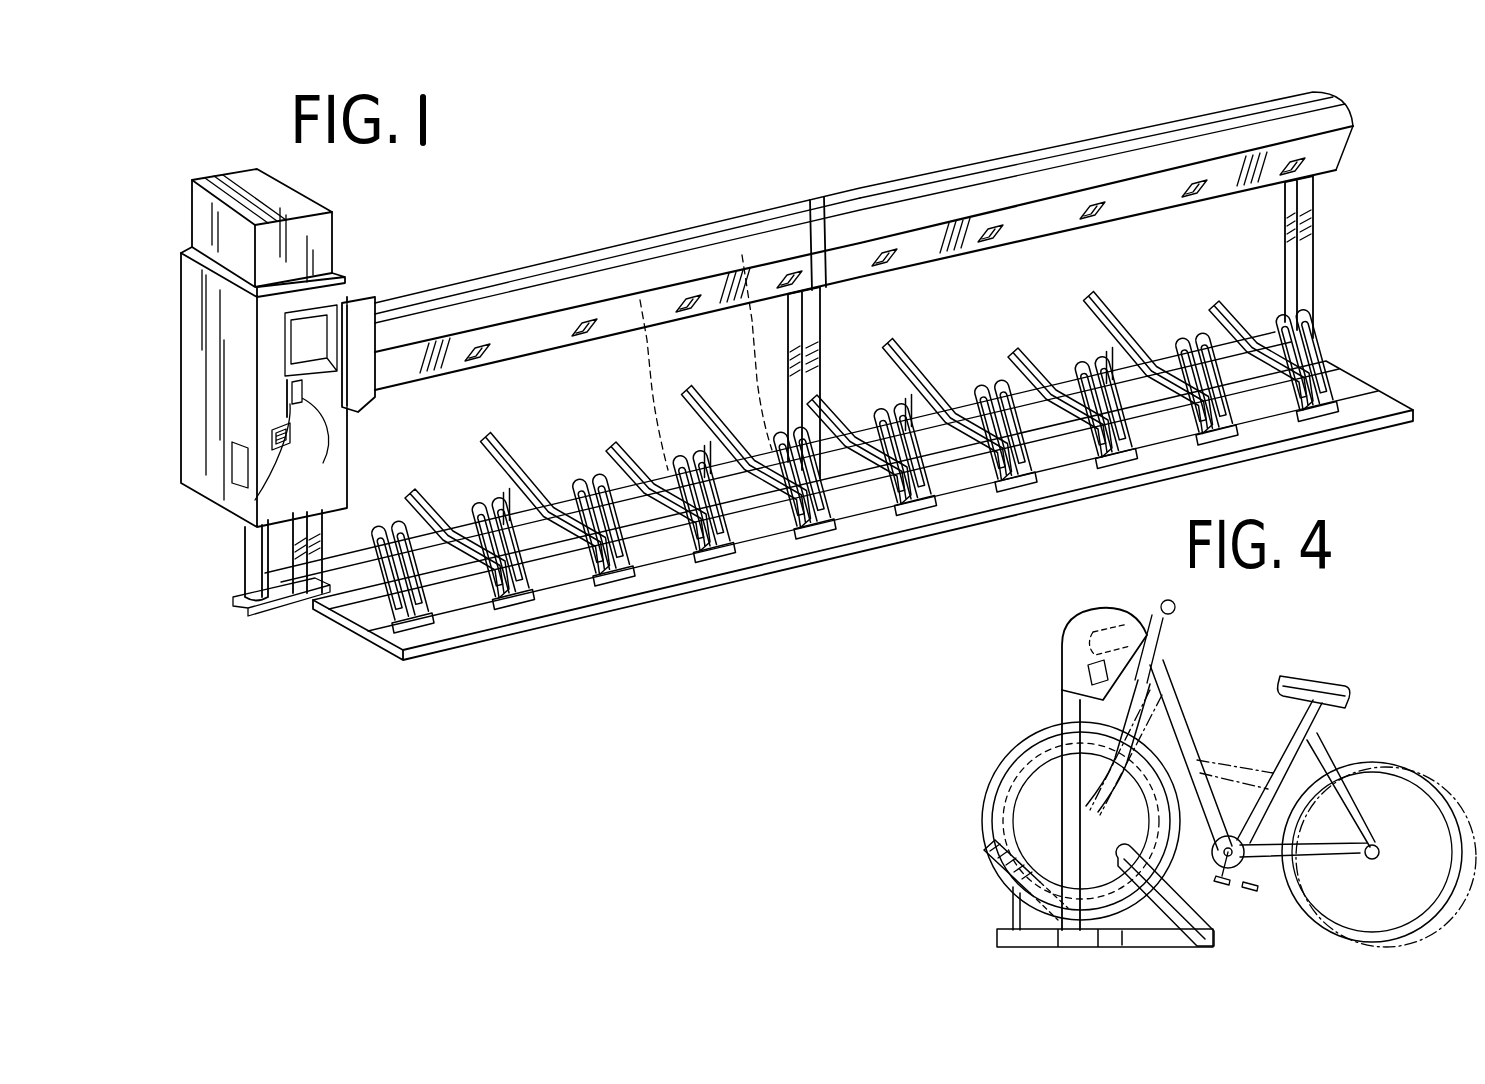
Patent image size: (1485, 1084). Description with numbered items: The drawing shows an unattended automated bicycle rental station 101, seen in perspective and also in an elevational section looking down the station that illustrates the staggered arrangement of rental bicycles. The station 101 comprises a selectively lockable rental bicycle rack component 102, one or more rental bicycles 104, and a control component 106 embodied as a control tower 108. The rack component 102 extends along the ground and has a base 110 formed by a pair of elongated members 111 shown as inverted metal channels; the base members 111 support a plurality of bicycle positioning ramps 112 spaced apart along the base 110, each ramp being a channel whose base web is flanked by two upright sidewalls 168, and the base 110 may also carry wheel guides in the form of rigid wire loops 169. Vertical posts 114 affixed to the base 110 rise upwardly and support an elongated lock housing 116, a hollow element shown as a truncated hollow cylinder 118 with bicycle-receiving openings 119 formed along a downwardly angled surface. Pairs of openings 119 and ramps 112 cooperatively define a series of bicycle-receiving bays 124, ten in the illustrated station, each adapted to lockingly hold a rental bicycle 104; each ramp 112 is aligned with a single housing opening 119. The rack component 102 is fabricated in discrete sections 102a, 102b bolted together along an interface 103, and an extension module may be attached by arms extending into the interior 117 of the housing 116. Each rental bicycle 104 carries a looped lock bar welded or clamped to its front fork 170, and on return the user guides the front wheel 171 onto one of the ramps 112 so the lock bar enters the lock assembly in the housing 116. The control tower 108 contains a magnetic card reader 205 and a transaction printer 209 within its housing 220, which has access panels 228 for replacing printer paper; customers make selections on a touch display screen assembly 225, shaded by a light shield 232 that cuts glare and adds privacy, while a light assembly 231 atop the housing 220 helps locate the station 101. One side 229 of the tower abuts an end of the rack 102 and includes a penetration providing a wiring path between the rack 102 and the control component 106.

In FIG. 1, the bicycle rental station 101 is at (237, 158).
In FIG. 1, the rental bicycle rack component 102 is at (1187, 124).
In FIG. 1, the rental rack section 102a is at (530, 284).
In FIG. 1, the rental rack section 102b is at (1007, 170).
In FIG. 1, the interface 103 is at (818, 236).
In FIG. 4, the rental bicycle 104 is at (1342, 684).
In FIG. 1, the control component 106 is at (345, 229).
In FIG. 1, the control tower 108 is at (194, 366).
In FIG. 1, the base 110 is at (1345, 327).
In FIG. 1, the elongated members 111 is at (326, 599).
In FIG. 4, the elongated members 111 is at (1095, 953).
In FIG. 1, the bicycle positioning ramps 112 is at (690, 400).
In FIG. 1, the vertical posts 114 is at (813, 323).
In FIG. 4, the vertical posts 114 is at (1069, 694).
In FIG. 1, the lock housing 116 is at (951, 180).
In FIG. 4, the lock housing 116 is at (1094, 613).
In FIG. 4, the interior 117 is at (1080, 642).
In FIG. 1, the truncated hollow cylinder 118 is at (1344, 120).
In FIG. 1, the bicycle-receiving openings 119 is at (1093, 214).
In FIG. 1, the bicycle-receiving bays 124 is at (690, 300).
In FIG. 1, the upright sidewalls 168 is at (468, 461).
In FIG. 1, the wire loops 169 is at (838, 531).
In FIG. 4, the wire loops 169 is at (1193, 949).
In FIG. 4, the front fork 170 is at (1161, 678).
In FIG. 4, the front wheel 171 is at (983, 797).
In FIG. 1, the magnetic card reader 205 is at (293, 440).
In FIG. 1, the transaction printer 209 is at (283, 433).
In FIG. 1, the housing 220 is at (201, 402).
In FIG. 1, the display screen assembly 225 is at (315, 334).
In FIG. 1, the access panels 228 is at (232, 461).
In FIG. 1, the side 229 is at (347, 452).
In FIG. 1, the light assembly 231 is at (190, 215).
In FIG. 1, the light shield 232 is at (263, 340).